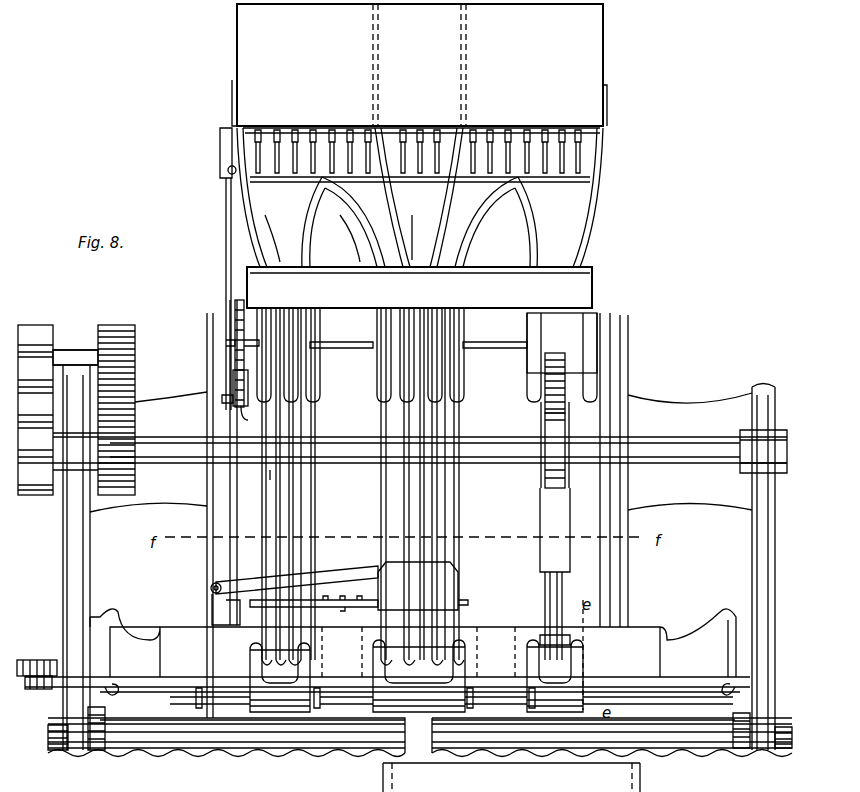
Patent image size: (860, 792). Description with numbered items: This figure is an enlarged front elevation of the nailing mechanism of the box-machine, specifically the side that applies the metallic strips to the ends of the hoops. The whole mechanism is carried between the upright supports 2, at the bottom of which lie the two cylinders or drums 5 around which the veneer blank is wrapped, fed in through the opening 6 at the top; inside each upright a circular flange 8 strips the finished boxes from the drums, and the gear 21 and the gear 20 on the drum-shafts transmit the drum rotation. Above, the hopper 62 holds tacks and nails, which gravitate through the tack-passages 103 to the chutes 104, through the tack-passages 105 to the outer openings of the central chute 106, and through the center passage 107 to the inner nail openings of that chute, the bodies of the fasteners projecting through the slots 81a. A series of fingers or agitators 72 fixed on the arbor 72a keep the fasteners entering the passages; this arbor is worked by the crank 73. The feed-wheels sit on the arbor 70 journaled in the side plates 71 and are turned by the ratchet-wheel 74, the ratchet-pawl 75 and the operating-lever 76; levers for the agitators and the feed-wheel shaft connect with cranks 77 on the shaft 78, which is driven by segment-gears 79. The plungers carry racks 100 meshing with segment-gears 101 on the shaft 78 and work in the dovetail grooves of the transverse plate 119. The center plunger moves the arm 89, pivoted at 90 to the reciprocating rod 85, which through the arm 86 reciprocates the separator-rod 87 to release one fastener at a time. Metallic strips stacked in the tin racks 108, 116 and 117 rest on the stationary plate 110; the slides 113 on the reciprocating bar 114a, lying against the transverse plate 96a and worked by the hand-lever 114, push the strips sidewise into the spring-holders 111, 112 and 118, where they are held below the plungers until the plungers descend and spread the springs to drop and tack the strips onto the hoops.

The hopper 62 is at (240, 47).
The fingers or agitators 72 is at (312, 131).
The arbor 72a is at (392, 135).
The side plates of the feed-hopper 71 is at (260, 240).
The crank / operating-lever 73 is at (220, 150).
The ratchet-wheel 74 is at (236, 305).
The ratchet-pawl 75 is at (234, 382).
The operating-lever 76 is at (254, 420).
The cranks 77 is at (232, 418).
The shaft 78 is at (196, 462).
The segment-gears 79 is at (33, 325).
The arbor 70 is at (347, 348).
The slots 81a is at (272, 498).
The racks 100 is at (555, 353).
The segment-gears 101 is at (545, 480).
The tack-passages 103 is at (415, 231).
The chutes 104 is at (272, 477).
The tack-passages 105 is at (408, 226).
The central chute 106 is at (397, 483).
The center passage 107 is at (420, 225).
The tin chute or rack 108 is at (212, 562).
The transverse plate 119 is at (163, 505).
The upright supports 2 is at (63, 558).
The pivot 90 is at (211, 588).
The arm 89 is at (337, 562).
The reciprocating rod 85 is at (226, 610).
The arm 86 is at (343, 611).
The separator-rod 87 is at (429, 594).
The tin chute or rack 116 is at (626, 573).
The tin chute or rack 117 is at (546, 470).
The transverse plate 96a is at (152, 635).
The hand-lever 114 is at (30, 660).
The reciprocating bar 114a is at (142, 680).
The stationary plate 110 is at (175, 702).
The slides 113 is at (197, 703).
The spring-holder 111 is at (280, 677).
The spring-holder 112 is at (430, 690).
The spring-holder 118 is at (570, 689).
The opening 6 is at (417, 712).
The cylinders or drums 5 is at (223, 752).
The circular flange 8 is at (105, 714).
The gear 21 is at (52, 752).
The gear 20 is at (785, 750).